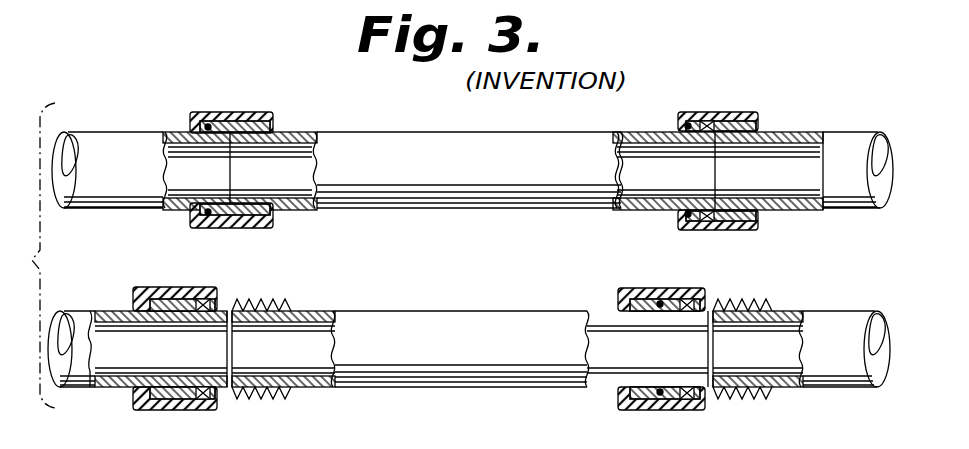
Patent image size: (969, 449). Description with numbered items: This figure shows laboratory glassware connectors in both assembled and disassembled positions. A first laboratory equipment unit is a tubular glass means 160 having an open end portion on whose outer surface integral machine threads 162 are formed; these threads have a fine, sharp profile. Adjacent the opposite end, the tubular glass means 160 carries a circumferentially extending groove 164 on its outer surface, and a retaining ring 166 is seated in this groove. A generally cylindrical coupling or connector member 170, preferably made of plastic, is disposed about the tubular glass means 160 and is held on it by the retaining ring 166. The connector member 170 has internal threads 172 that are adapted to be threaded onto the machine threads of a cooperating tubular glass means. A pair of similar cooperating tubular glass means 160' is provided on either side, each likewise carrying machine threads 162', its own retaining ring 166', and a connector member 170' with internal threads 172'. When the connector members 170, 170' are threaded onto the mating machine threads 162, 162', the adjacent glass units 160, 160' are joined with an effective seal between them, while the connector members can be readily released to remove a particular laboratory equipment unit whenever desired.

The tubular glass means 160 is at (467, 259).
The cooperating tubular glass means 160' is at (470, 259).
The machine threads 162 is at (253, 267).
The machine threads 162' is at (729, 244).
The groove 164 is at (684, 208).
The retaining ring 166 is at (694, 260).
The retaining ring 166' is at (197, 261).
The coupling member 170 is at (706, 237).
The coupling member 170' is at (214, 234).
The internal threads 172 is at (703, 260).
The internal threads 172' is at (203, 267).